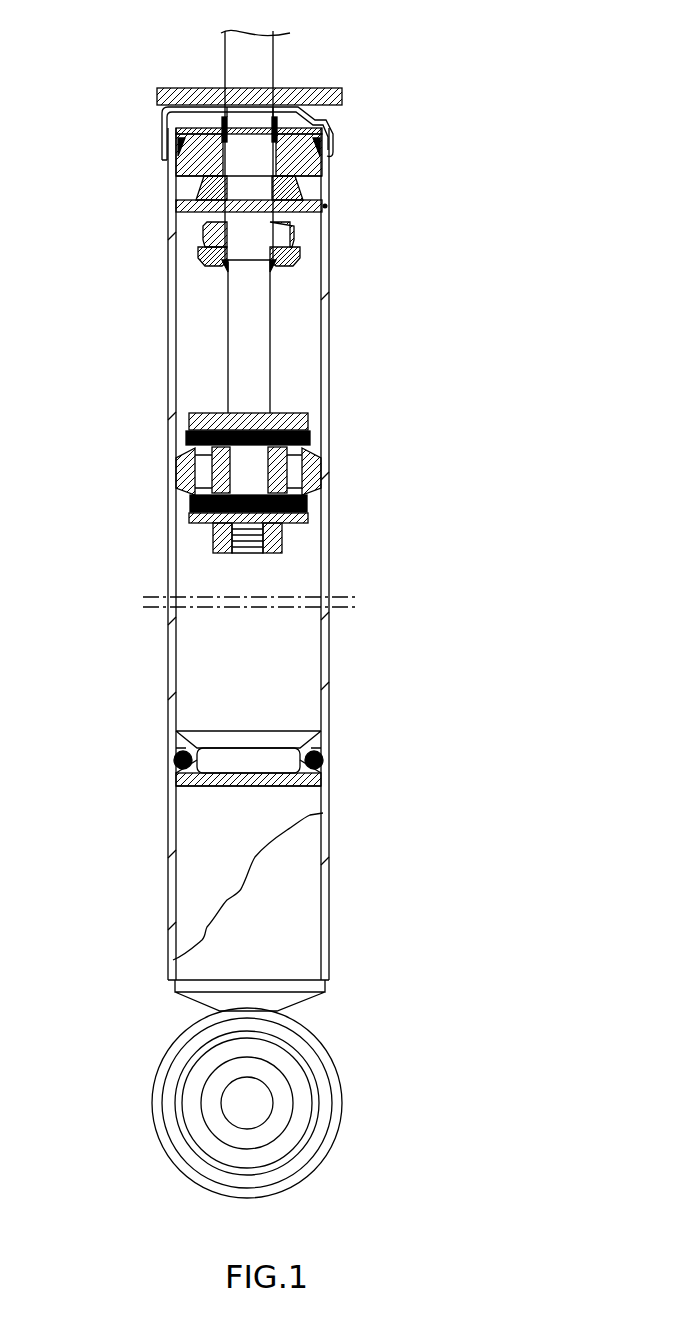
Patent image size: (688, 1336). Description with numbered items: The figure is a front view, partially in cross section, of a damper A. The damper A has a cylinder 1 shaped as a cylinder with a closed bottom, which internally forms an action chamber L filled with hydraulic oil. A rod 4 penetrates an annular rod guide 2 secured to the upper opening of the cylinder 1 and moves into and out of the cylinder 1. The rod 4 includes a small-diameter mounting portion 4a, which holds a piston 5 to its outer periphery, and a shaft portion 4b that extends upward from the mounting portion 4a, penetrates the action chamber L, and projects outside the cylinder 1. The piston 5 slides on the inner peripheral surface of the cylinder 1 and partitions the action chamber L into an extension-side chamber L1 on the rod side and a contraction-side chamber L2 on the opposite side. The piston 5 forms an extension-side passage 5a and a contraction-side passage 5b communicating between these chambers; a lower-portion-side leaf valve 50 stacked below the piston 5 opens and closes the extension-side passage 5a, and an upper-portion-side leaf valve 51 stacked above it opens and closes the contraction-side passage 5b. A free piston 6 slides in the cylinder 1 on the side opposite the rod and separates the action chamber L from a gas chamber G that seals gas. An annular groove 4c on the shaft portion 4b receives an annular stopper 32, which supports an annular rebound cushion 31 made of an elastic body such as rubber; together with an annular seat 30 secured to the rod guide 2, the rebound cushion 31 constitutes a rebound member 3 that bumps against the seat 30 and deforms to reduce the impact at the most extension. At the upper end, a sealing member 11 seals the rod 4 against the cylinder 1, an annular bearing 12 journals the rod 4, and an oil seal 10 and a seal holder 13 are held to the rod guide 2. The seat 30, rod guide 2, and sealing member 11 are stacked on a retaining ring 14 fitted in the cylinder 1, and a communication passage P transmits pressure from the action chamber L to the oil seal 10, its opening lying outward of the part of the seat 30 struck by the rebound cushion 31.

The cylinder 1 is at (329, 673).
The rod guide 2 is at (185, 160).
The rebound member 3 is at (107, 223).
The rod 4 is at (223, 53).
The mounting portion 4a is at (213, 528).
The shaft portion 4b is at (258, 323).
The annular groove 4c is at (240, 283).
The piston 5 is at (330, 467).
The extension-side passage 5a is at (193, 468).
The contraction-side passage 5b is at (323, 478).
The free piston 6 is at (178, 739).
The oil seal 10 is at (300, 175).
The sealing member 11 is at (165, 112).
The bearing 12 is at (333, 138).
The seal holder 13 is at (205, 190).
The retaining ring 14 is at (322, 207).
The seat 30 is at (203, 226).
The rebound cushion 31 is at (210, 252).
The stopper 32 is at (297, 255).
The lower-portion-side leaf valve 50 is at (195, 498).
The upper-portion-side leaf valve 51 is at (307, 443).
The damper A is at (377, 90).
The communication passage P is at (332, 198).
The action chamber L is at (290, 393).
The extension-side chamber L1 is at (193, 378).
The contraction-side chamber L2 is at (272, 665).
The gas chamber G is at (250, 851).